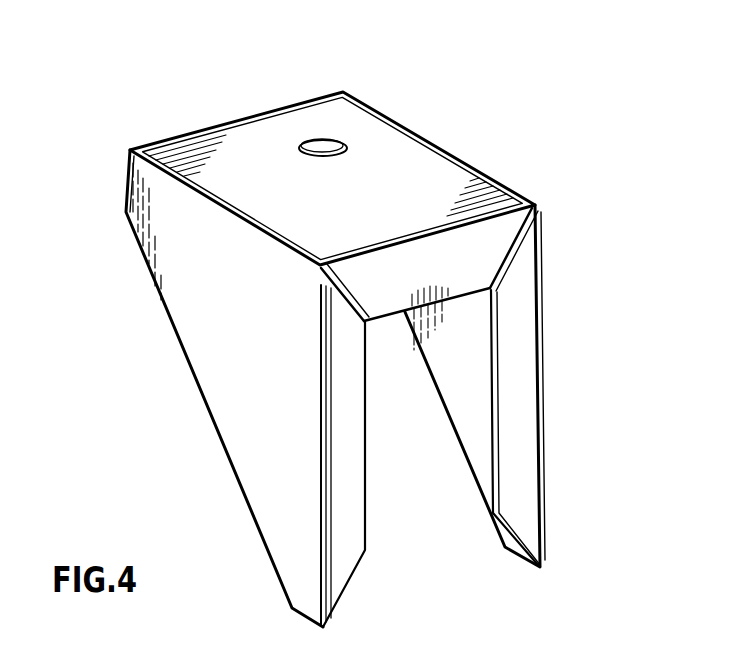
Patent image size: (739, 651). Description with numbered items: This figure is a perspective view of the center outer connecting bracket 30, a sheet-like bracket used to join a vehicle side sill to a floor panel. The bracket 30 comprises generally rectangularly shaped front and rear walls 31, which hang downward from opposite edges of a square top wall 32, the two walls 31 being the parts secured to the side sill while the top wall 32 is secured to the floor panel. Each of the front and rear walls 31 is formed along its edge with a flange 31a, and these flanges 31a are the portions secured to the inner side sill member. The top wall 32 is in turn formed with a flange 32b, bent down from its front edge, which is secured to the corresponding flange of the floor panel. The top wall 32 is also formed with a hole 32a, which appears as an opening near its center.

The center outer connecting bracket 30 is at (503, 140).
The front and rear walls 31 is at (237, 402).
The flange 31a is at (520, 470).
The top wall 32 is at (208, 140).
The hole 32a is at (324, 146).
The flange 32b is at (424, 258).